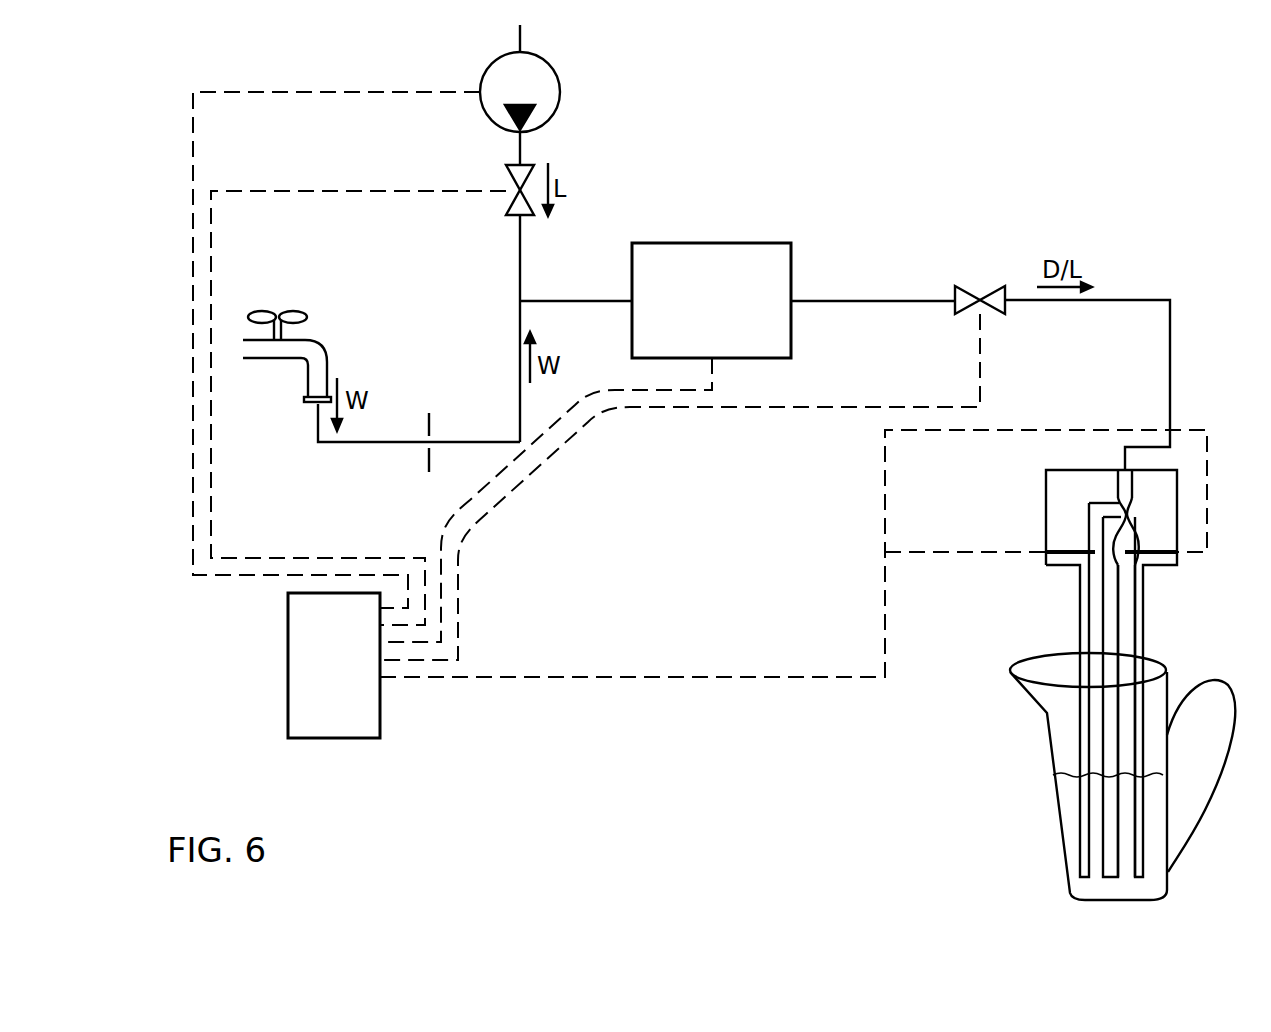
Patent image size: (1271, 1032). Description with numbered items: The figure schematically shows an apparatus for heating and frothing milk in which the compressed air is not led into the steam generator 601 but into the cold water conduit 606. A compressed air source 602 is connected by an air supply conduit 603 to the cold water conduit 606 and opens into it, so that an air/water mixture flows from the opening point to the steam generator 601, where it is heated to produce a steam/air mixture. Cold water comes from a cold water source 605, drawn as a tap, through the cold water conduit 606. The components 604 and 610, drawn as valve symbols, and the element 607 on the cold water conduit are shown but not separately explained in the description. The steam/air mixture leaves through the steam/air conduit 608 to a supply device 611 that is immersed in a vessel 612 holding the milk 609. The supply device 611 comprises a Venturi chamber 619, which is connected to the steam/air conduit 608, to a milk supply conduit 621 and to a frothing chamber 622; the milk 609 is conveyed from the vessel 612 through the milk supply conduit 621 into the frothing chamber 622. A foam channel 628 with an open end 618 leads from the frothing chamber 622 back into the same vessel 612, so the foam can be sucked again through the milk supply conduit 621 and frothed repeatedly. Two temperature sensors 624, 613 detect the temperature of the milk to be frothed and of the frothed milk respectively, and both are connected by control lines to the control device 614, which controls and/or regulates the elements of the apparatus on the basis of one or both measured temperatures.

The steam generator 601 is at (732, 316).
The compressed air source 602 is at (558, 79).
The air supply conduit 603 is at (520, 228).
The valve 604 is at (507, 207).
The cold water source 605 is at (327, 348).
The cold water conduit 606 is at (375, 442).
The sensor 607 is at (435, 412).
The steam/air conduit 608 is at (1170, 372).
The milk 609 is at (1070, 829).
The valve 610 is at (982, 286).
The supply device 611 is at (1155, 567).
The vessel 612 is at (1169, 862).
The temperature sensor 613 is at (1165, 556).
The control device 614 is at (353, 678).
The open end 618 is at (1127, 876).
The Venturi chamber 619 is at (1130, 511).
The milk supply conduit 621 is at (1098, 615).
The frothing chamber 622 is at (1131, 548).
The temperature sensor 624 is at (1060, 551).
The foam channel 628 is at (1125, 621).